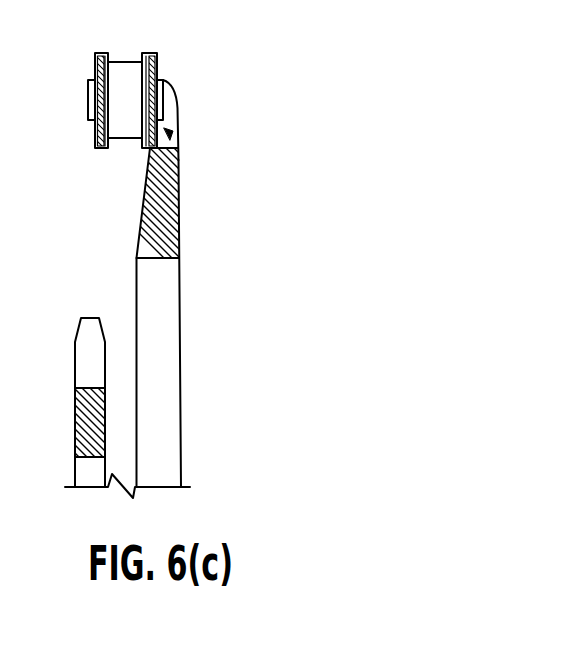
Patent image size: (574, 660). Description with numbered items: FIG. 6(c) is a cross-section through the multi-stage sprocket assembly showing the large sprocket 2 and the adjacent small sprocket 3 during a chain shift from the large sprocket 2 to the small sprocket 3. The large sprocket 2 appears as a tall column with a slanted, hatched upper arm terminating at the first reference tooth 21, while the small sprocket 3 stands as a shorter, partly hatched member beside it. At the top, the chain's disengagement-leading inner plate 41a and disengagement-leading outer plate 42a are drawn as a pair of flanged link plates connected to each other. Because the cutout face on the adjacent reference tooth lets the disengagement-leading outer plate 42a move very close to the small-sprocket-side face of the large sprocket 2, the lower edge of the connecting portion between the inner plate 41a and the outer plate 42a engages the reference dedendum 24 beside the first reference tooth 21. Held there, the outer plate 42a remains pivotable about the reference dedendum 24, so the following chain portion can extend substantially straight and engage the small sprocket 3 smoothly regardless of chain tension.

The large sprocket 2 is at (180, 300).
The small sprocket 3 is at (77, 418).
The first reference tooth 21 is at (179, 118).
The reference dedendum 24 is at (171, 134).
The disengagement-leading inner plate 41a is at (114, 84).
The disengagement-leading outer plate 42a is at (158, 69).